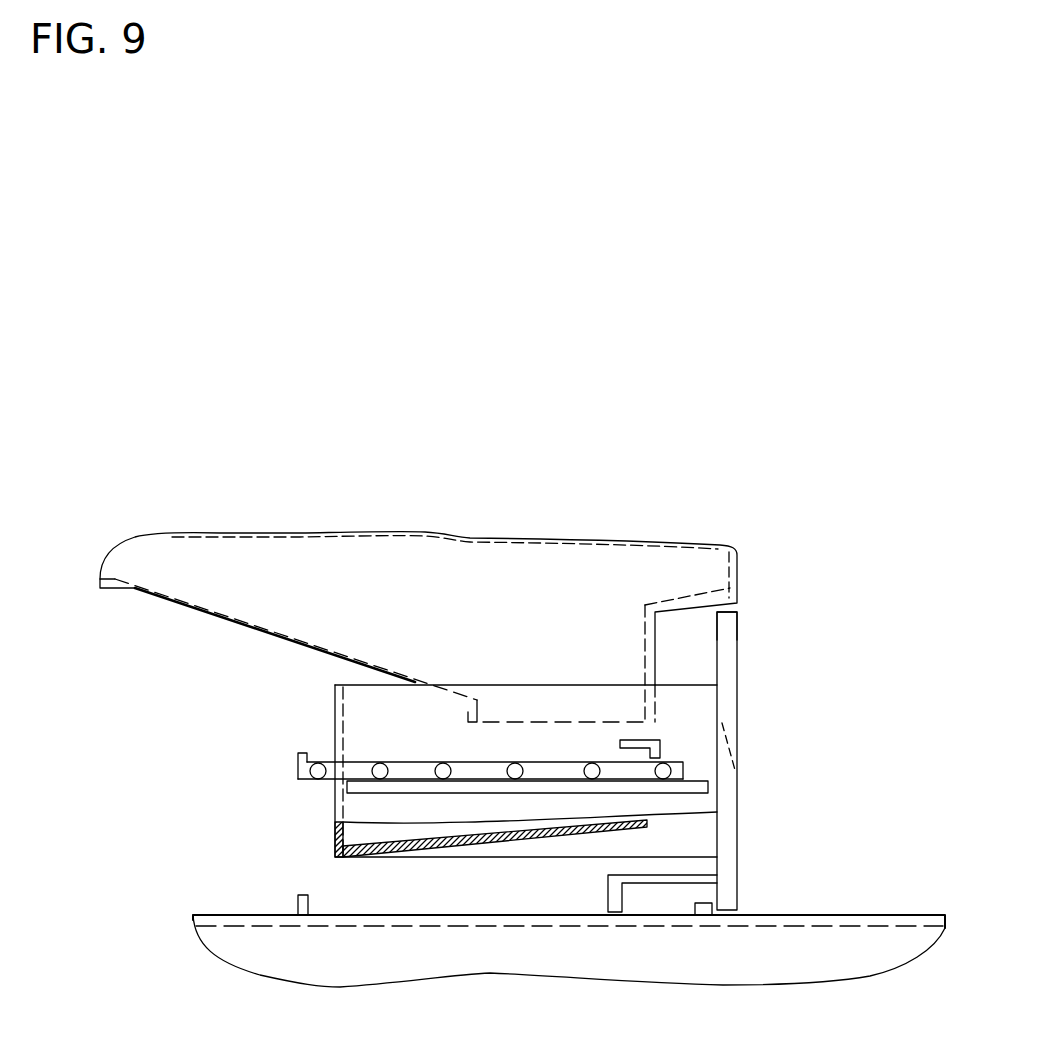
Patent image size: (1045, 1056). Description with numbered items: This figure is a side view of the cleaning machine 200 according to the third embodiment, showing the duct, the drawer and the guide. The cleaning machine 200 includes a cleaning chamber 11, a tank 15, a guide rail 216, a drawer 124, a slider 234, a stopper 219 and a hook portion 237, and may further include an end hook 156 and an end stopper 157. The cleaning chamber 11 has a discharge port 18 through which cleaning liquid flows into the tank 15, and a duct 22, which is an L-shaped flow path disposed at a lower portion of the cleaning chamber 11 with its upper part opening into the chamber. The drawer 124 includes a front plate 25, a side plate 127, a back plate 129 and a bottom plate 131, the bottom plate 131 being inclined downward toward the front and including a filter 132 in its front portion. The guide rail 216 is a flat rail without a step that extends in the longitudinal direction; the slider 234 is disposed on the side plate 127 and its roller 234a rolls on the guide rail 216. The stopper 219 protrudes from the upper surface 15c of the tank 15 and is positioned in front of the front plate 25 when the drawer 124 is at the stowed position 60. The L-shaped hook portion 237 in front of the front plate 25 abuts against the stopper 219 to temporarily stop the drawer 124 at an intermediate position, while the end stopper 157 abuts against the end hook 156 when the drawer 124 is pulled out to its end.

The cleaning machine 200 is at (931, 451).
The cleaning chamber 11 is at (737, 553).
The duct 22 is at (200, 612).
The front plate 25 is at (737, 742).
The drawer 124 is at (804, 610).
The stowed position 60 is at (757, 620).
The end stopper 157 is at (660, 743).
The back plate 129 is at (333, 722).
The side plate 127 is at (605, 684).
The discharge port 18 is at (535, 722).
The slider 234 is at (417, 762).
The roller 234a is at (517, 793).
The end hook 156 is at (298, 760).
The guide rail 216 is at (412, 793).
The bottom plate 131 is at (607, 832).
The filter 132 is at (337, 836).
The hook portion 237 is at (612, 915).
The stopper 219 is at (703, 916).
The tank 15 is at (216, 960).
The upper surface 15c is at (912, 913).